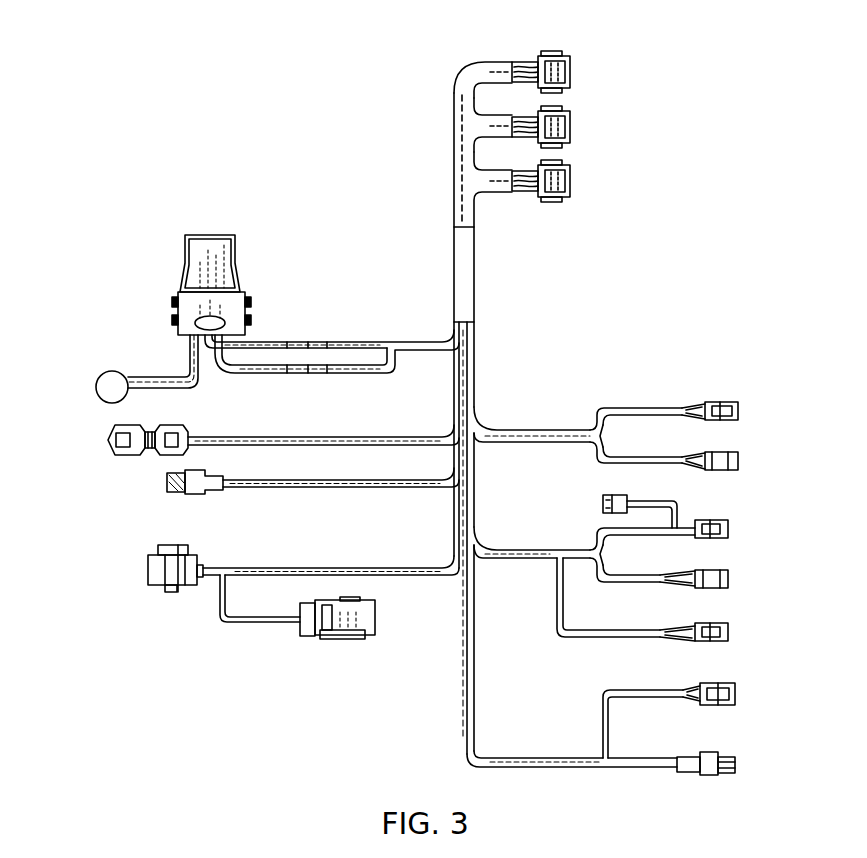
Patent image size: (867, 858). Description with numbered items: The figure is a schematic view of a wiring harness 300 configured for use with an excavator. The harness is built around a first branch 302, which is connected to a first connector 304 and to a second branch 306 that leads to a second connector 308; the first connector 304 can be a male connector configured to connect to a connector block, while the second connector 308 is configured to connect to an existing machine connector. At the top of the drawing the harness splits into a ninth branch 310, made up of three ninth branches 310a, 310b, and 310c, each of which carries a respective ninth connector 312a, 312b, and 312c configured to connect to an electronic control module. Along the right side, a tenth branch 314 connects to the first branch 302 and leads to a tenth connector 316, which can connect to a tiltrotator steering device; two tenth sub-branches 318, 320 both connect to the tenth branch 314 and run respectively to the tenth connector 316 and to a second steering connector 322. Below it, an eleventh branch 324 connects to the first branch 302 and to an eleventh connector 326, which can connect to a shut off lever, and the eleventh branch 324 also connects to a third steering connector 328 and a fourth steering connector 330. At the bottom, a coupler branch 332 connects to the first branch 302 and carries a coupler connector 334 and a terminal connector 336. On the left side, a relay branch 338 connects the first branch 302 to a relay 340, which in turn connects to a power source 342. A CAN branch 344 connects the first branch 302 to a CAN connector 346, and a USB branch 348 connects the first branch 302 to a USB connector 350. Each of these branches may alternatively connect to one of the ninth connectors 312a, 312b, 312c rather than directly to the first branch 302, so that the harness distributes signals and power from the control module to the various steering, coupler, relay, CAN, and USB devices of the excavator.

The wiring harness 300 is at (155, 66).
The first branch 302 is at (208, 566).
The first connector 304 is at (148, 573).
The second branch 306 is at (245, 625).
The second connector 308 is at (343, 642).
The ninth branch 310 is at (452, 215).
The ninth branch 310a is at (495, 182).
The ninth branch 310b is at (487, 125).
The ninth branch 310c is at (495, 72).
The ninth connector 312a is at (572, 180).
The ninth connector 312b is at (572, 127).
The ninth connector 312c is at (572, 72).
The tenth branch 314 is at (523, 430).
The tenth connector 316 is at (718, 402).
The tenth sub-branch 318 is at (618, 408).
The tenth sub-branch 320 is at (632, 457).
The second steering connector 322 is at (720, 452).
The eleventh branch 324 is at (515, 550).
The eleventh connector 326 is at (720, 520).
The third steering connector 328 is at (720, 570).
The fourth steering connector 330 is at (608, 495).
The coupler branch 332 is at (510, 758).
The coupler connector 334 is at (722, 683).
The terminal connector 336 is at (722, 755).
The relay branch 338 is at (415, 340).
The relay 340 is at (208, 235).
The power source 342 is at (110, 370).
The CAN branch 344 is at (309, 436).
The CAN connector 346 is at (108, 440).
The USB branch 348 is at (333, 489).
The USB connector 350 is at (167, 482).